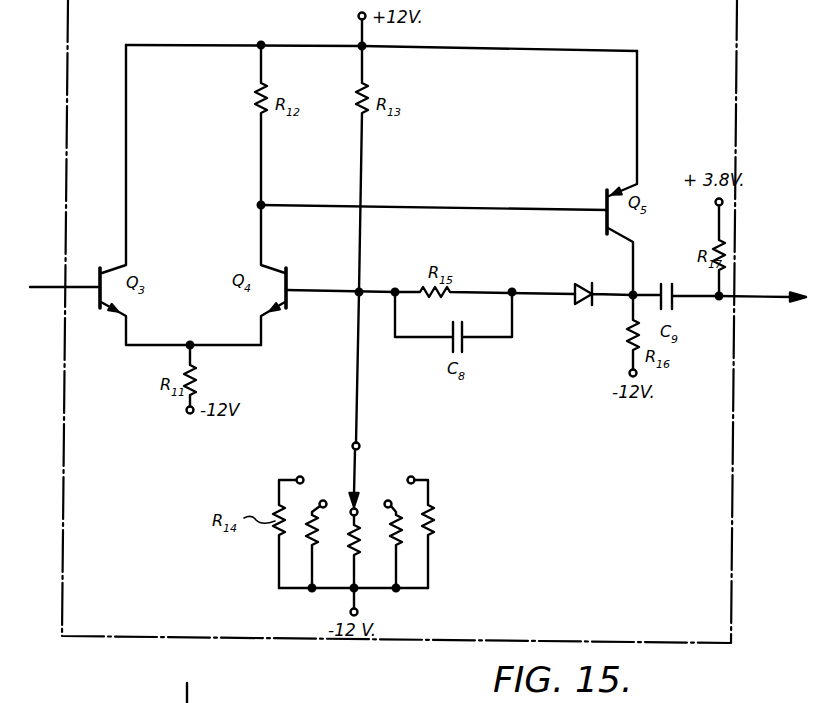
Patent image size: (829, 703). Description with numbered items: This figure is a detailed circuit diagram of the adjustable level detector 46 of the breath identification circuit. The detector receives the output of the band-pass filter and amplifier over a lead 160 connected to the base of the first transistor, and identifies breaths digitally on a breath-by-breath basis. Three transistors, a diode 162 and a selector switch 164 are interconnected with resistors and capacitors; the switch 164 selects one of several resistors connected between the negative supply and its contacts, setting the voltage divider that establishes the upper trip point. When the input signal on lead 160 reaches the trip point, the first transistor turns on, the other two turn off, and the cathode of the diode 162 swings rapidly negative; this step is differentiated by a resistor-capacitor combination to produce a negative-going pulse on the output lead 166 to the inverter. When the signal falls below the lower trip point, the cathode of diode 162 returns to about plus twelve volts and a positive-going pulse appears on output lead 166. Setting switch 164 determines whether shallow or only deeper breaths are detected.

The adjustable level detector 46 is at (739, 120).
The lead 160 is at (55, 266).
The diode 162 is at (580, 310).
The selector switch 164 is at (360, 472).
The output lead 166 is at (752, 297).